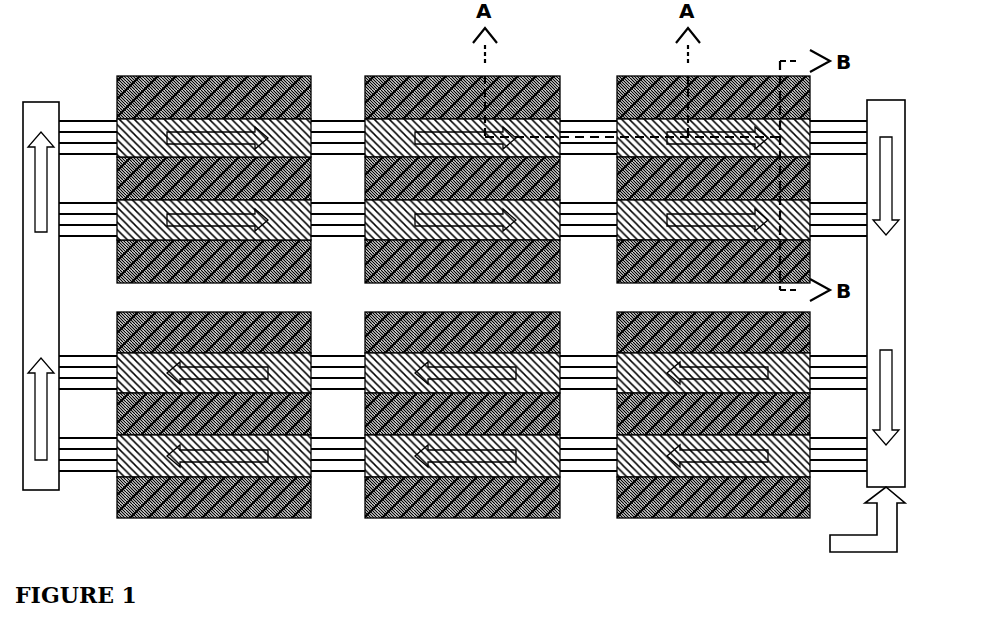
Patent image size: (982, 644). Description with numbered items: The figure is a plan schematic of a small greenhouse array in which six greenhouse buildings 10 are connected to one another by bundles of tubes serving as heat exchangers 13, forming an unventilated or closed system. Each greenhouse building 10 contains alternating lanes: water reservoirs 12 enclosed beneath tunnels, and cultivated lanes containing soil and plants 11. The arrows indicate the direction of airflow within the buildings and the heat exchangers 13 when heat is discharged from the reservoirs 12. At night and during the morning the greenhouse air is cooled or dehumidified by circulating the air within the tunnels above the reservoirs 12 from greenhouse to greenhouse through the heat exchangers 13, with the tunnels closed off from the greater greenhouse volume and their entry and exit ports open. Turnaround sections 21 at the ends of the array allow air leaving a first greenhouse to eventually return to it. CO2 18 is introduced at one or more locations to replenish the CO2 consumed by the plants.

The greenhouse building 10 is at (214, 162).
The cultivated lanes containing soil and plants 11 is at (195, 98).
The water reservoirs 12 is at (282, 135).
The heat exchangers 13 is at (88, 130).
The CO2 18 is at (848, 533).
The turnaround sections 21 is at (41, 296).